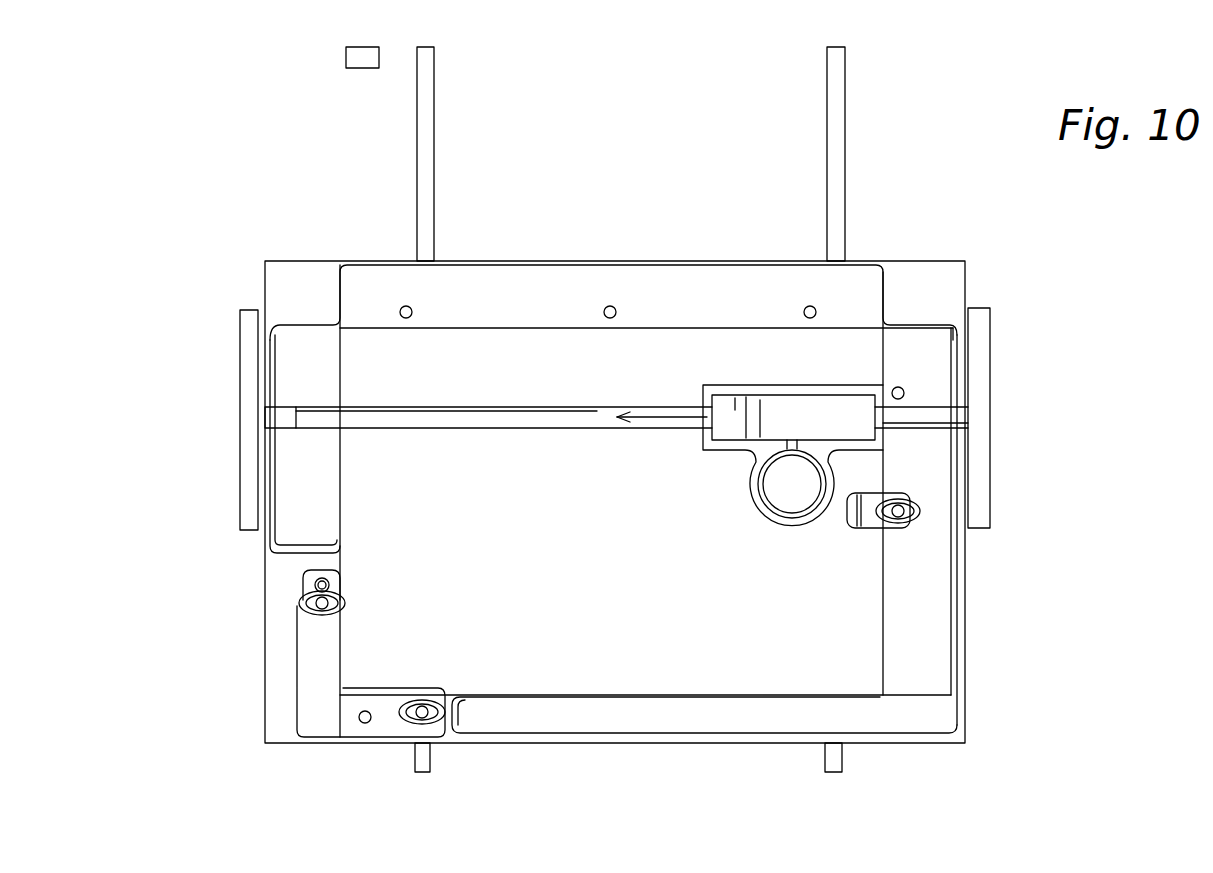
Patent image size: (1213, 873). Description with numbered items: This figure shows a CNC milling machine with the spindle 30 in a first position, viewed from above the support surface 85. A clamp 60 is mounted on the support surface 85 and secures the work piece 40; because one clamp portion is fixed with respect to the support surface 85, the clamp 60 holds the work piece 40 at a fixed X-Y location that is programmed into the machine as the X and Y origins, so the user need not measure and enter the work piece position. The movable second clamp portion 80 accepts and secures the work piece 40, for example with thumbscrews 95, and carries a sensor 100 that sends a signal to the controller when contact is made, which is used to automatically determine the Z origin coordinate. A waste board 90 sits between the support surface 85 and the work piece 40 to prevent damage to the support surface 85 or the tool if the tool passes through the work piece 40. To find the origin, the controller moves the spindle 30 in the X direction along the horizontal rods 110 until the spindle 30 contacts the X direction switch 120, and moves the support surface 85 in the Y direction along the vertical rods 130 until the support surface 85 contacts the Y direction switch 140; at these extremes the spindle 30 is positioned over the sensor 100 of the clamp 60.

The spindle 30 is at (785, 505).
The work piece 40 is at (640, 573).
The clamp 60 is at (337, 645).
The second clamp portion 80 is at (338, 724).
The support surface 85 is at (922, 262).
The waste board 90 is at (916, 724).
The thumbscrews 95 is at (345, 601).
The sensor 100 is at (366, 710).
The horizontal rods 110 is at (507, 408).
The X direction switch 120 is at (282, 405).
The vertical rods 130 is at (430, 763).
The Y direction switch 140 is at (360, 69).